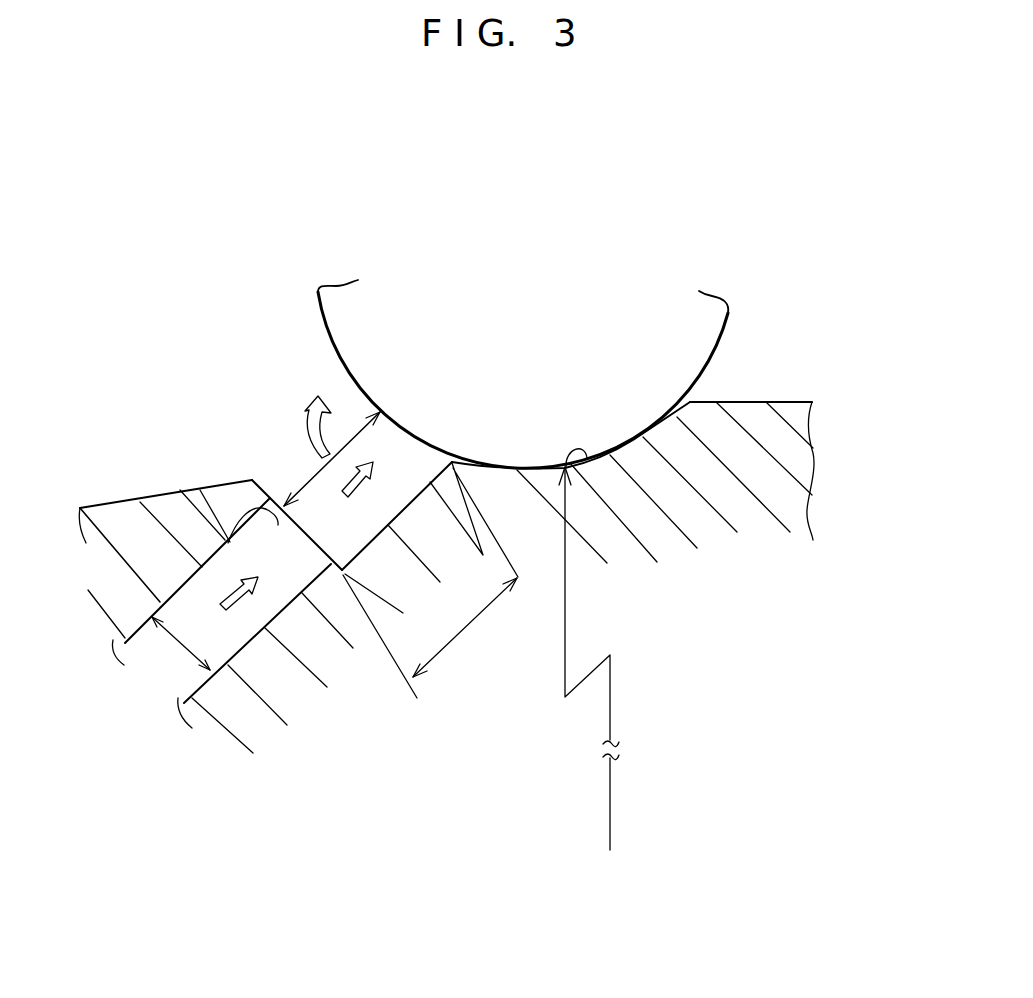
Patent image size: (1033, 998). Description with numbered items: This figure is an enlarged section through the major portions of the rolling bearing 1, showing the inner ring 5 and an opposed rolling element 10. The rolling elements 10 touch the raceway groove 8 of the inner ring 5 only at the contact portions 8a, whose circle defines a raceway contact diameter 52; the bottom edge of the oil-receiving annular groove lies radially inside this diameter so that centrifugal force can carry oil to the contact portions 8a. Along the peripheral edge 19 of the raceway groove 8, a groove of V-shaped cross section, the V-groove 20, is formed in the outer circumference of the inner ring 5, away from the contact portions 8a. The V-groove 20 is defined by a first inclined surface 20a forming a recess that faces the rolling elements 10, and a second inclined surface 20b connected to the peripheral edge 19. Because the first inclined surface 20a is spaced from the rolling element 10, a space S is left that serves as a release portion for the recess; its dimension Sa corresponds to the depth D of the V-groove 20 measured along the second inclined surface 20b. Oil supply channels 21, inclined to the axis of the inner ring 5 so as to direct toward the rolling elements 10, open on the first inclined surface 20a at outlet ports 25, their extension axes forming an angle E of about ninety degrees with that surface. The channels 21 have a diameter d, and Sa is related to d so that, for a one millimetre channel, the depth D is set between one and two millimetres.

The rolling bearing 1 is at (740, 208).
The inner ring 5 is at (825, 469).
The raceway groove 8 is at (642, 437).
The contact portions 8a is at (587, 458).
The rolling elements 10 is at (722, 337).
The peripheral edge 19 is at (452, 462).
The V-groove 20 is at (282, 478).
The first inclined surface 20a is at (267, 490).
The second inclined surface 20b is at (386, 507).
The oil supply channels 21 is at (265, 609).
The outlet ports 25 is at (318, 521).
The raceway contact diameter 52 is at (610, 812).
The space S is at (293, 470).
The dimension of the space Sa is at (345, 438).
The angle E is at (180, 490).
The diameter of the oil supply channels d is at (181, 643).
The depth of the V-groove D is at (465, 627).